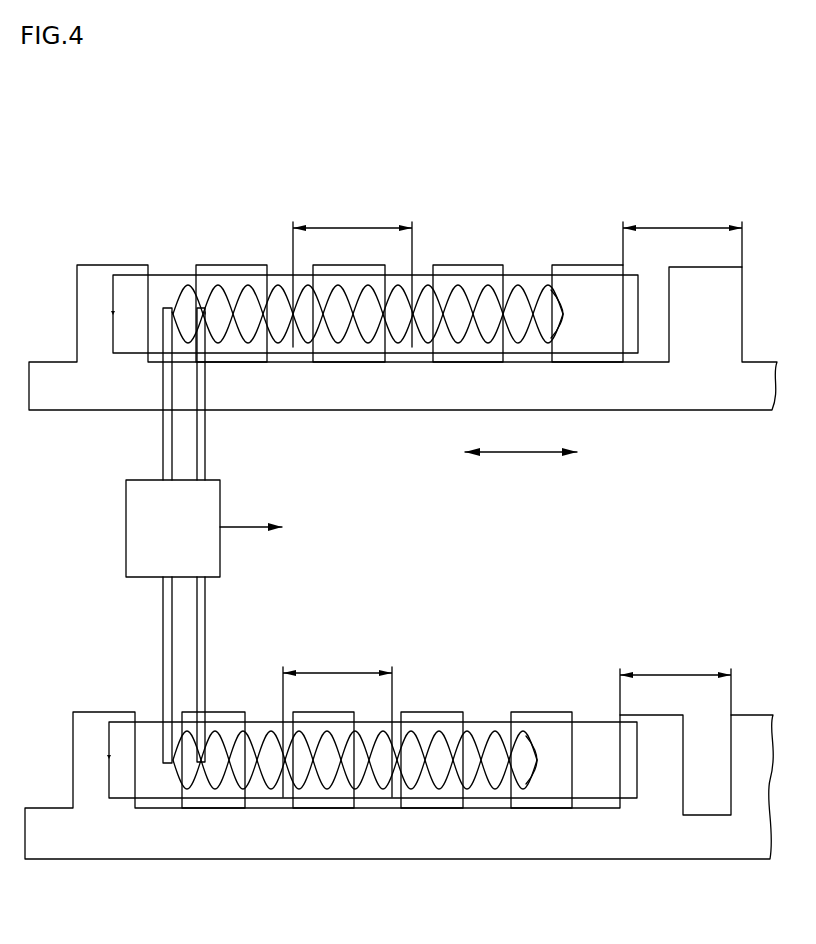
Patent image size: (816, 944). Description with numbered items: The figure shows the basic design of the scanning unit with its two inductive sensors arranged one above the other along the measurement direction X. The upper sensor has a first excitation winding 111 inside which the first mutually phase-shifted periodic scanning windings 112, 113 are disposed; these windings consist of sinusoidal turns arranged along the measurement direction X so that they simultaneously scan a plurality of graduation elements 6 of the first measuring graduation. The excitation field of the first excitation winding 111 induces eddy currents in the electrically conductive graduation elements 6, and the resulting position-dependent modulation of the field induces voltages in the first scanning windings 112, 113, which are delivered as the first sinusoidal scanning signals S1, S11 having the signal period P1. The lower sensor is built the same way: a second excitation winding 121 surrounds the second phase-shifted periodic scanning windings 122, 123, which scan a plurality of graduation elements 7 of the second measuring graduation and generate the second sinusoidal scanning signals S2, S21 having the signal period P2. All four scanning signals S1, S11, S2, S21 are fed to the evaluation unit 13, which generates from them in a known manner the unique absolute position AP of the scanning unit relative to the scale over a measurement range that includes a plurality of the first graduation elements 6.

The graduation elements of the first measuring graduation 6 is at (93, 325).
The graduation elements of the second measuring graduation 7 is at (85, 770).
The first excitation winding 111 is at (167, 274).
The first scanning winding 112 is at (470, 288).
The first scanning winding 113 is at (505, 292).
The second excitation winding 121 is at (145, 721).
The second scanning winding 122 is at (443, 732).
The second scanning winding 123 is at (478, 733).
The evaluation unit 13 is at (137, 525).
The first sinusoidal scanning signal S1 is at (163, 441).
The first sinusoidal scanning signal S11 is at (200, 449).
The second sinusoidal scanning signal S2 is at (163, 619).
The second sinusoidal scanning signal S21 is at (200, 651).
The absolute position AP is at (240, 527).
The measurement direction X is at (521, 440).
The signal period of the first scanning signals P1 is at (517, 272).
The signal period of the second scanning signals P2 is at (507, 720).